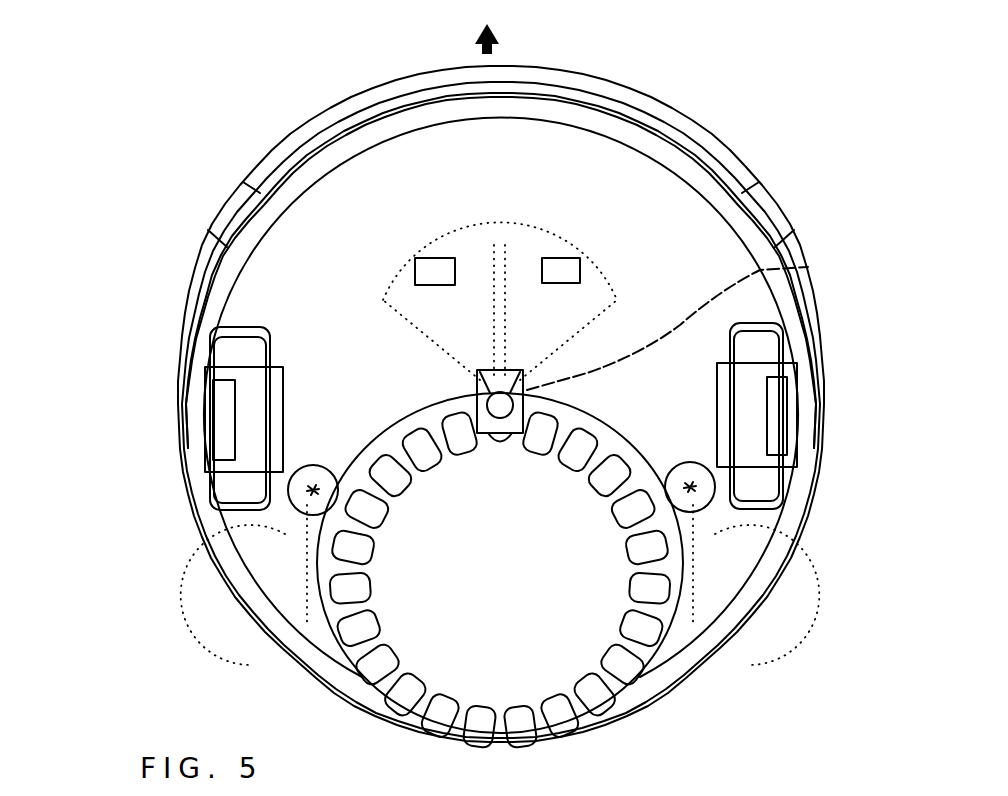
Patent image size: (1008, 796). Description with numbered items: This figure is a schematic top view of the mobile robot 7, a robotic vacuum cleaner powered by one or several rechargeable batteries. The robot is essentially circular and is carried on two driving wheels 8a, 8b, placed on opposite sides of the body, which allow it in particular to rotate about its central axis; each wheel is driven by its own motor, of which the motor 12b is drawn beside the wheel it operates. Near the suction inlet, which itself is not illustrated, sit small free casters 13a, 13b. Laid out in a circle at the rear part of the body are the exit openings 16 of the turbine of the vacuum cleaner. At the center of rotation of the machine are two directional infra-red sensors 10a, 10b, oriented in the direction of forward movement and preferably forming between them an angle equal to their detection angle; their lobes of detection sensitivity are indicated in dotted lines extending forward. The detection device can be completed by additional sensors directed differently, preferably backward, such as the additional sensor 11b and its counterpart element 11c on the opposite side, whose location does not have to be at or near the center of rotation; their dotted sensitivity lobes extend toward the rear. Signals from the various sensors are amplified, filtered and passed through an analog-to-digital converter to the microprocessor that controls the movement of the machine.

The mobile robot 7 is at (152, 177).
The driving wheel 8a is at (240, 349).
The driving wheel 8b is at (755, 355).
The directional infra-red sensor 10a is at (478, 382).
The directional infra-red sensor 10b is at (527, 385).
The additional sensor 11b is at (698, 486).
The left driving wheel 11c is at (290, 507).
The motor 12b is at (277, 408).
The small free caster 13a is at (432, 268).
The small free caster 13b is at (563, 259).
The exit openings of the turbine 16 is at (373, 675).